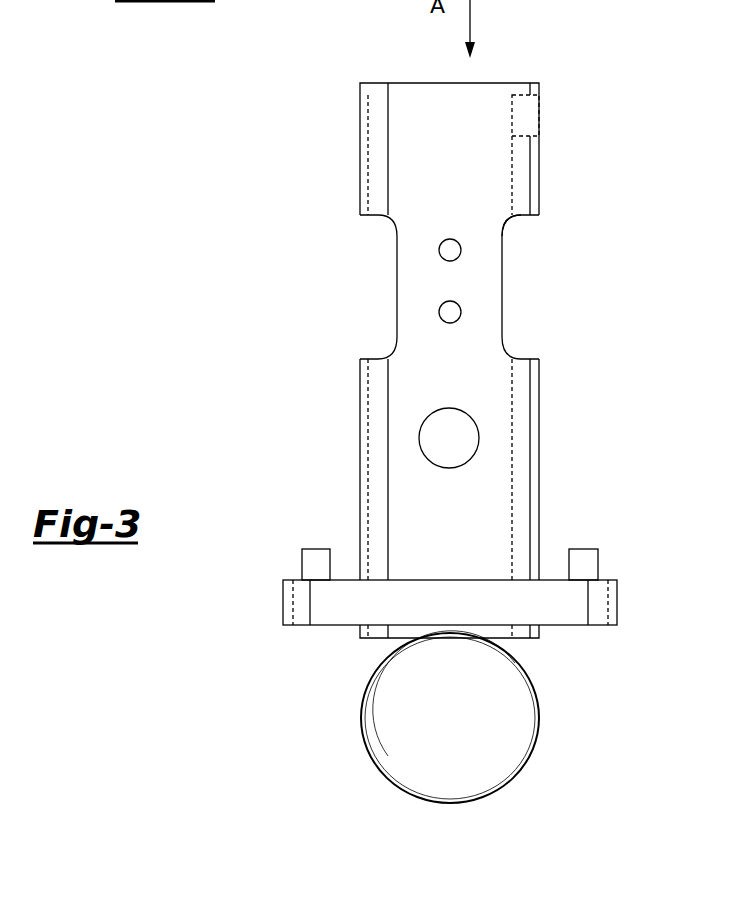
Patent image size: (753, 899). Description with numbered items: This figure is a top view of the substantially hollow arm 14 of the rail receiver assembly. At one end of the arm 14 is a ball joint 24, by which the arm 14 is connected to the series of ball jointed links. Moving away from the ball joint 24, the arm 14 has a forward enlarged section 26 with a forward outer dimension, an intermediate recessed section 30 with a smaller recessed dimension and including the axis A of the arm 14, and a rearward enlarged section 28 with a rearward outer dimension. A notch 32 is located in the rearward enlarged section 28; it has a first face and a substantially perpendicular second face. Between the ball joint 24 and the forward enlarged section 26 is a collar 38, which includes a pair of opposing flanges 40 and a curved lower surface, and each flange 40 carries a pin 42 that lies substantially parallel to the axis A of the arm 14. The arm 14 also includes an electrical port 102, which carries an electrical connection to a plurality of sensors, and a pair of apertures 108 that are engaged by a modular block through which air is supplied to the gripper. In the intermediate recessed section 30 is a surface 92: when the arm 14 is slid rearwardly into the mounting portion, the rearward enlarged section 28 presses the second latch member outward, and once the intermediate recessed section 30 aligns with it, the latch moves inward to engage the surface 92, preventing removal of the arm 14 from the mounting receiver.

The arm 14 is at (612, 85).
The ball joint 24 is at (540, 718).
The forward enlarged section 26 is at (540, 474).
The rearward enlarged section 28 is at (540, 172).
The intermediate recessed section 30 is at (503, 298).
The notch 32 is at (533, 120).
The collar 38 is at (617, 618).
The flange 40 is at (283, 604).
The pin 42 is at (316, 549).
The surface 92 is at (505, 225).
The electrical port 102 is at (433, 446).
The apertures 108 is at (447, 312).